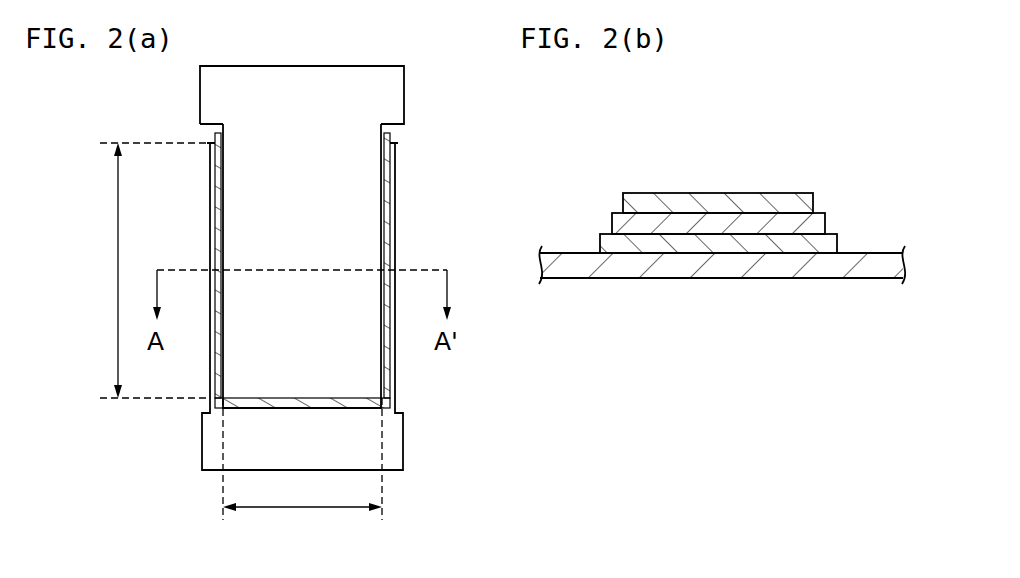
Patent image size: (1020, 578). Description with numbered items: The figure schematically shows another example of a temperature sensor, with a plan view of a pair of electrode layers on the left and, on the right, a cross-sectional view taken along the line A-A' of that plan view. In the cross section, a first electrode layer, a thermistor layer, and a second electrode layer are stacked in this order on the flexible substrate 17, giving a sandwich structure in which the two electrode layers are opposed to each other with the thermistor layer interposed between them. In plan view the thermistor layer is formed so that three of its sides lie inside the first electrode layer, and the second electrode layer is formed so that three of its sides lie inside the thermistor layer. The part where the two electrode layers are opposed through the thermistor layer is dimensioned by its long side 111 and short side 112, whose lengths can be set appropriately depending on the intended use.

The flexible substrate 17 is at (826, 265).
The long side 111 is at (136, 270).
The short side 112 is at (302, 470).